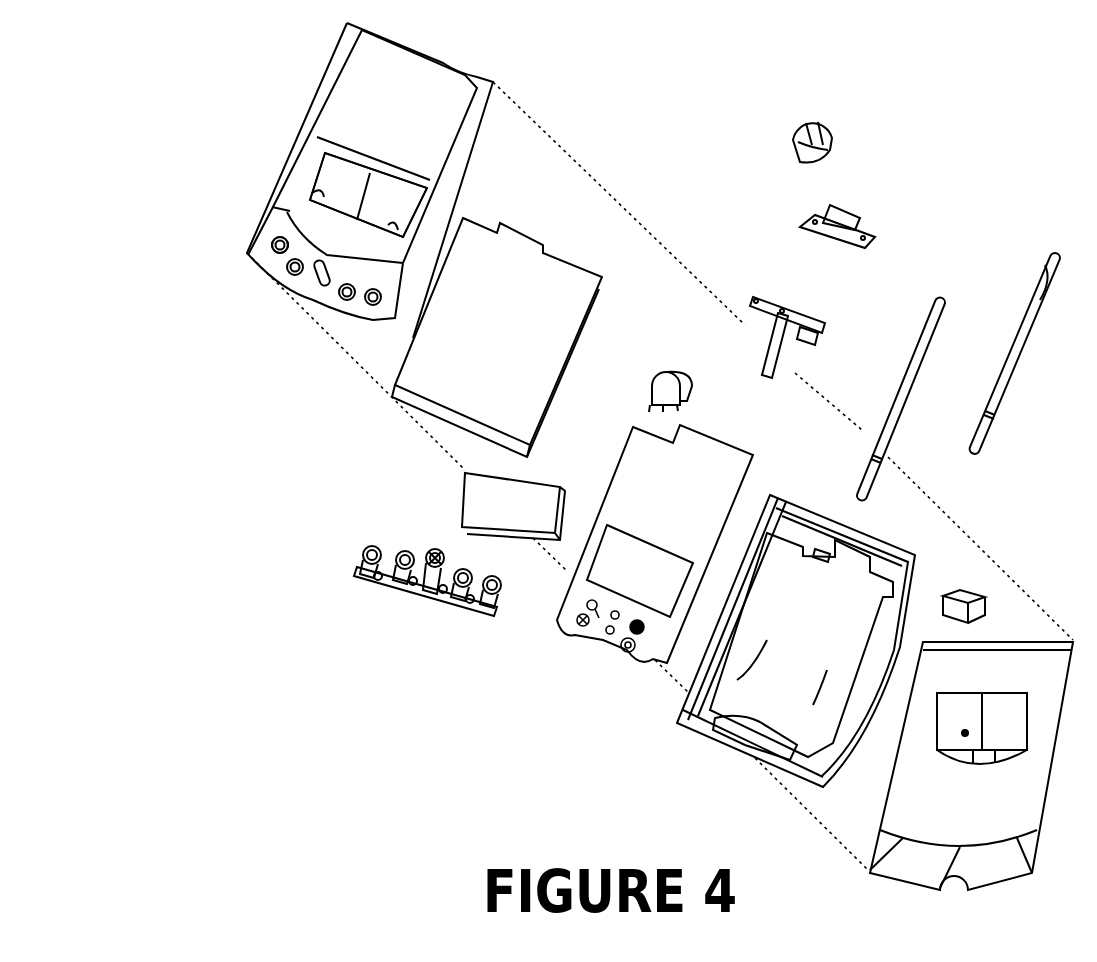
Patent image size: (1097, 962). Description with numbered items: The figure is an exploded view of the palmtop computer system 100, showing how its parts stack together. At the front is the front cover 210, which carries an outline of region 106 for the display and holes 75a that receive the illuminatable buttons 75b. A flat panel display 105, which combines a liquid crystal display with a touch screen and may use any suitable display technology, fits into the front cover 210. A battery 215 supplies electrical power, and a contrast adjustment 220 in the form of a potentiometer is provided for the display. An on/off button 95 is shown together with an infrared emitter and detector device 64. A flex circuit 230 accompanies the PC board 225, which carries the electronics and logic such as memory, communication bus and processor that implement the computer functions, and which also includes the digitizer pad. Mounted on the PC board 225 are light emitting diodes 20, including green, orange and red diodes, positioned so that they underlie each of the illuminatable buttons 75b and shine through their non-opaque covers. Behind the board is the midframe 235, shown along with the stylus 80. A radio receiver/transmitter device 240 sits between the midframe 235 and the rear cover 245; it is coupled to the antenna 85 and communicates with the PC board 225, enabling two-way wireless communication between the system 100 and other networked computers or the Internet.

The palmtop computer system 100 is at (110, 54).
The front cover 210 is at (420, 131).
The region 106 is at (325, 175).
The holes 75a is at (272, 238).
The flat panel display 105 is at (521, 348).
The contrast adjustment 220 is at (663, 369).
The battery 215 is at (530, 506).
The illuminatable buttons 75b is at (373, 547).
The PC board 225 is at (683, 525).
The Light Emitting Diodes 20 is at (616, 596).
The midframe 235 is at (828, 628).
The radio receiver/transmitter device 240 is at (960, 590).
The rear cover 245 is at (988, 810).
The on/off button 95 is at (834, 124).
The infrared emitter and detector device 64 is at (849, 205).
The flex circuit 230 is at (801, 310).
The antenna 85 is at (926, 360).
The stylus 80 is at (1029, 337).